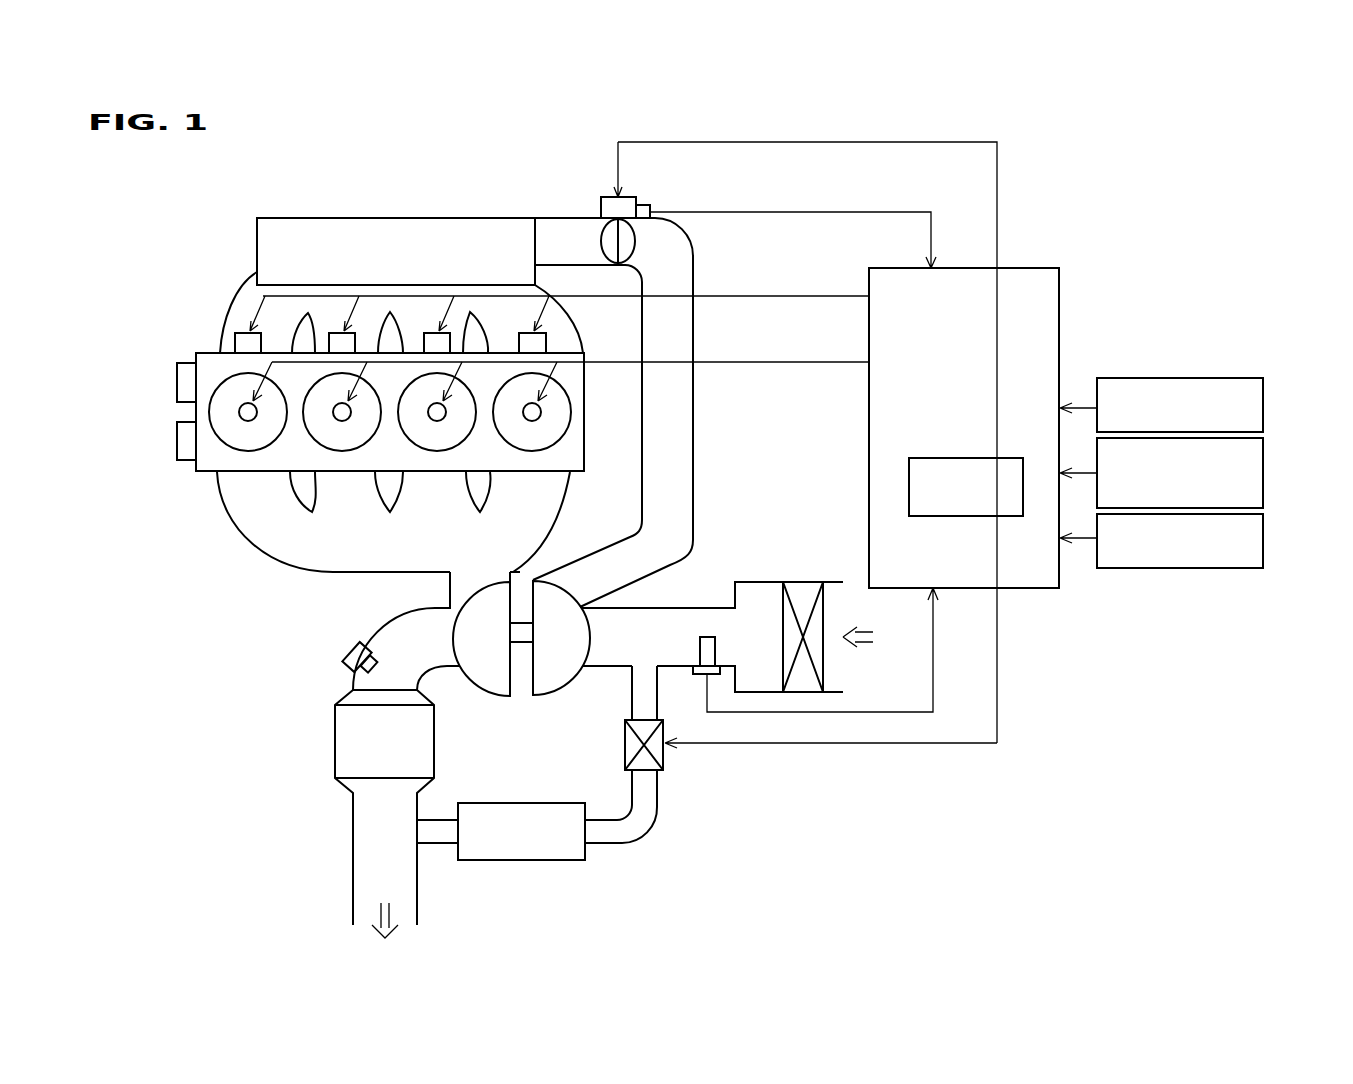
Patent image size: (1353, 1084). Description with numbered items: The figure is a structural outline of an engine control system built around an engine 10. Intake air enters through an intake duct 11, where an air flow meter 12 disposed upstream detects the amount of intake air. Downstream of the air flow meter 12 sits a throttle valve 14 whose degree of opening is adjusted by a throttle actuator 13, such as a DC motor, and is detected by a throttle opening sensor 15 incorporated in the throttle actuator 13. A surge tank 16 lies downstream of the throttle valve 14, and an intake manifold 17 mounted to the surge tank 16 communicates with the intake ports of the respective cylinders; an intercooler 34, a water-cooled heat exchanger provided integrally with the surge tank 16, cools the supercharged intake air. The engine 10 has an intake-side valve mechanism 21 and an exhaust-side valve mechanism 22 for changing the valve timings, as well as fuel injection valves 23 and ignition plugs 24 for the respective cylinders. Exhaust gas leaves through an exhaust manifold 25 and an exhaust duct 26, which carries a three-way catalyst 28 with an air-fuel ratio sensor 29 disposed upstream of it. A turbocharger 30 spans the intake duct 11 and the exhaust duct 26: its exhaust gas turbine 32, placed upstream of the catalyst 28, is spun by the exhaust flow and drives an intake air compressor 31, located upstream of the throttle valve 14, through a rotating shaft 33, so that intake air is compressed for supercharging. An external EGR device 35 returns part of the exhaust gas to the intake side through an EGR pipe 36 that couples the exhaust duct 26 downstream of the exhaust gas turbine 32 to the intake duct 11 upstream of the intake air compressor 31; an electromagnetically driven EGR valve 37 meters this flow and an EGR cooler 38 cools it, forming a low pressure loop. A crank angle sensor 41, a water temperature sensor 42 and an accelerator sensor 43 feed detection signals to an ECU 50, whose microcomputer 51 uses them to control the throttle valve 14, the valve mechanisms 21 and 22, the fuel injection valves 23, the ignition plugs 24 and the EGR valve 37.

The engine 10 is at (201, 282).
The intake duct 11 is at (710, 607).
The air flow meter 12 is at (697, 675).
The throttle actuator 13 is at (600, 210).
The throttle valve 14 is at (635, 243).
The throttle opening sensor 15 is at (645, 205).
The surge tank 16 is at (413, 218).
The intake manifold 17 is at (237, 290).
The intake-side valve mechanism 21 is at (177, 382).
The exhaust-side valve mechanism 22 is at (177, 437).
The fuel injection valves 23 is at (546, 344).
The ignition plugs 24 is at (541, 412).
The exhaust manifold 25 is at (235, 520).
The exhaust duct 26 is at (378, 637).
The catalyst 28 is at (335, 725).
The air-fuel ratio sensor 29 is at (347, 655).
The turbocharger 30 is at (529, 682).
The intake air compressor 31 is at (565, 692).
The exhaust gas turbine 32 is at (480, 690).
The rotating shaft 33 is at (519, 645).
The intercooler 34 is at (505, 218).
The EGR device 35 is at (707, 787).
The EGR pipe 36 is at (605, 843).
The EGR valve 37 is at (663, 760).
The EGR cooler 38 is at (553, 860).
The crank angle sensor 41 is at (1263, 408).
The water temperature sensor 42 is at (1263, 473).
The accelerator sensor 43 is at (1263, 538).
The ECU 50 is at (964, 407).
The microcomputer 51 is at (1003, 458).